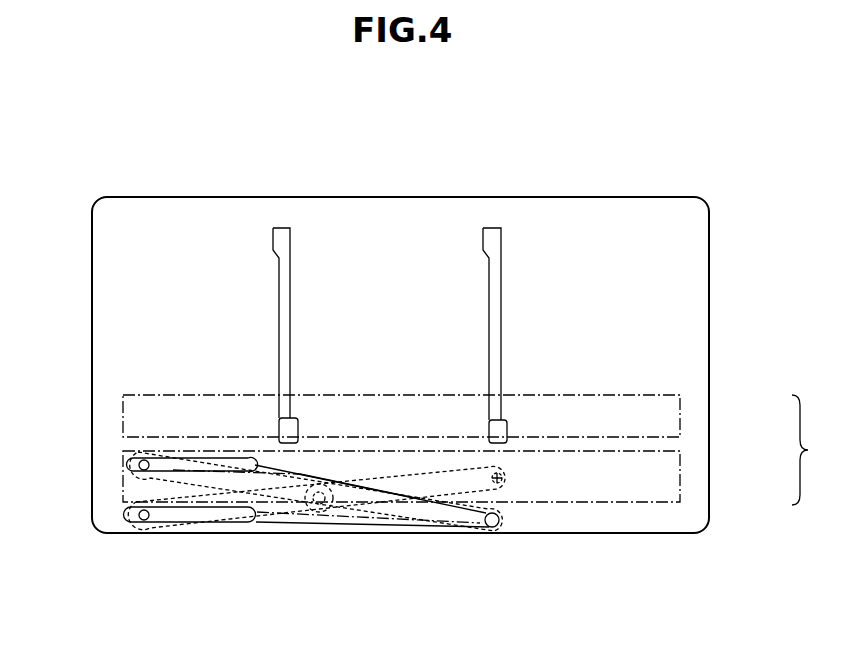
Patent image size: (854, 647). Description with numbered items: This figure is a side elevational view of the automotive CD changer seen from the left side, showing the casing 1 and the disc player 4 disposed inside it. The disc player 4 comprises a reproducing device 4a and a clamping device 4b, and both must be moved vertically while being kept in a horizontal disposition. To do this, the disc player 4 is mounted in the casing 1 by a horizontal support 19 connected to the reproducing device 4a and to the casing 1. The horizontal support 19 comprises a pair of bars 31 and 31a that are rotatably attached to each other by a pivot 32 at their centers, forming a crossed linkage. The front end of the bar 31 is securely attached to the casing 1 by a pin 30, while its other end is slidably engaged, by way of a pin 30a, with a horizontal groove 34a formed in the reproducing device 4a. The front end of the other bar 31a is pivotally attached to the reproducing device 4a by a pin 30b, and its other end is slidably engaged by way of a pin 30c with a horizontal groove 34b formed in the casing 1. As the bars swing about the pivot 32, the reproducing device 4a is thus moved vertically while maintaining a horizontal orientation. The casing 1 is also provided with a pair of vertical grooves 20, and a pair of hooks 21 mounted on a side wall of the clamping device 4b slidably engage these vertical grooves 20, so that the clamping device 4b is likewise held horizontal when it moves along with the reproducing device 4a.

The casing 1 is at (696, 318).
The disc player 4 is at (809, 450).
The reproducing device 4a is at (680, 465).
The clamping device 4b is at (680, 410).
The horizontal support 19 is at (368, 596).
The vertical grooves 20 is at (285, 282).
The hooks 21 is at (293, 418).
The pin 30 is at (503, 528).
The pin 30a is at (128, 482).
The pin 30b is at (510, 478).
The pin 30c is at (146, 522).
The bar 31 is at (427, 522).
The bar 31a is at (422, 480).
The pivot 32 is at (316, 513).
The horizontal groove 34a is at (165, 455).
The horizontal groove 34b is at (175, 524).